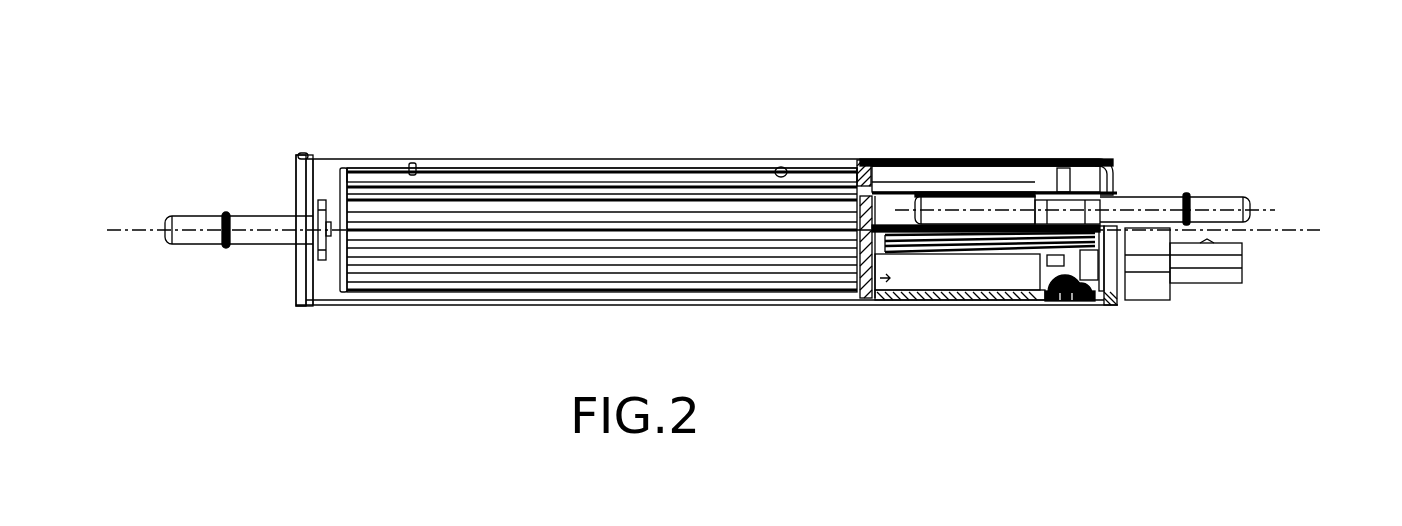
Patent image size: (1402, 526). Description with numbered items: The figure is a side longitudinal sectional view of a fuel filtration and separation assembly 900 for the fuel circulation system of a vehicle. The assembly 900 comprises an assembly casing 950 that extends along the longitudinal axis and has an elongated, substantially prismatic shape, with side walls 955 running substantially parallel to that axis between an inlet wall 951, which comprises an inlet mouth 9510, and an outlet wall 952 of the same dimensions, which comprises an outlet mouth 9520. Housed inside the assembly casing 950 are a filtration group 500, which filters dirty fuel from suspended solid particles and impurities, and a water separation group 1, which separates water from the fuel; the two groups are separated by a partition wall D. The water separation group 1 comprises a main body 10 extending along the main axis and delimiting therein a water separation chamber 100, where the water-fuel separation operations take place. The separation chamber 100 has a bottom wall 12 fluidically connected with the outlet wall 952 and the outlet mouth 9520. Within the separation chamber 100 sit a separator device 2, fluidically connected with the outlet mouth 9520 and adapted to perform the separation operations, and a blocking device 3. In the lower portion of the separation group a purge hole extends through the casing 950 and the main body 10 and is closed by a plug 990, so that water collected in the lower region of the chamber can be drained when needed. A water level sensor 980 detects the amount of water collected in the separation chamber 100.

The fuel filtration and separation assembly 900 is at (237, 112).
The assembly casing 950 is at (675, 140).
The inlet wall 951 is at (290, 192).
The outlet wall 952 is at (1125, 178).
The side walls 955 is at (607, 160).
The filtration group 500 is at (368, 165).
The water separation chamber 100 is at (850, 290).
The partition wall D is at (863, 160).
The water separation group 1 is at (988, 152).
The separator device 2 is at (963, 180).
The blocking device 3 is at (927, 260).
The main body 10 is at (997, 290).
The bottom wall 12 is at (1110, 300).
The plug 990 is at (1068, 312).
The water level sensor 980 is at (1258, 275).
The inlet mouth 9510 is at (280, 236).
The outlet mouth 9520 is at (1152, 212).